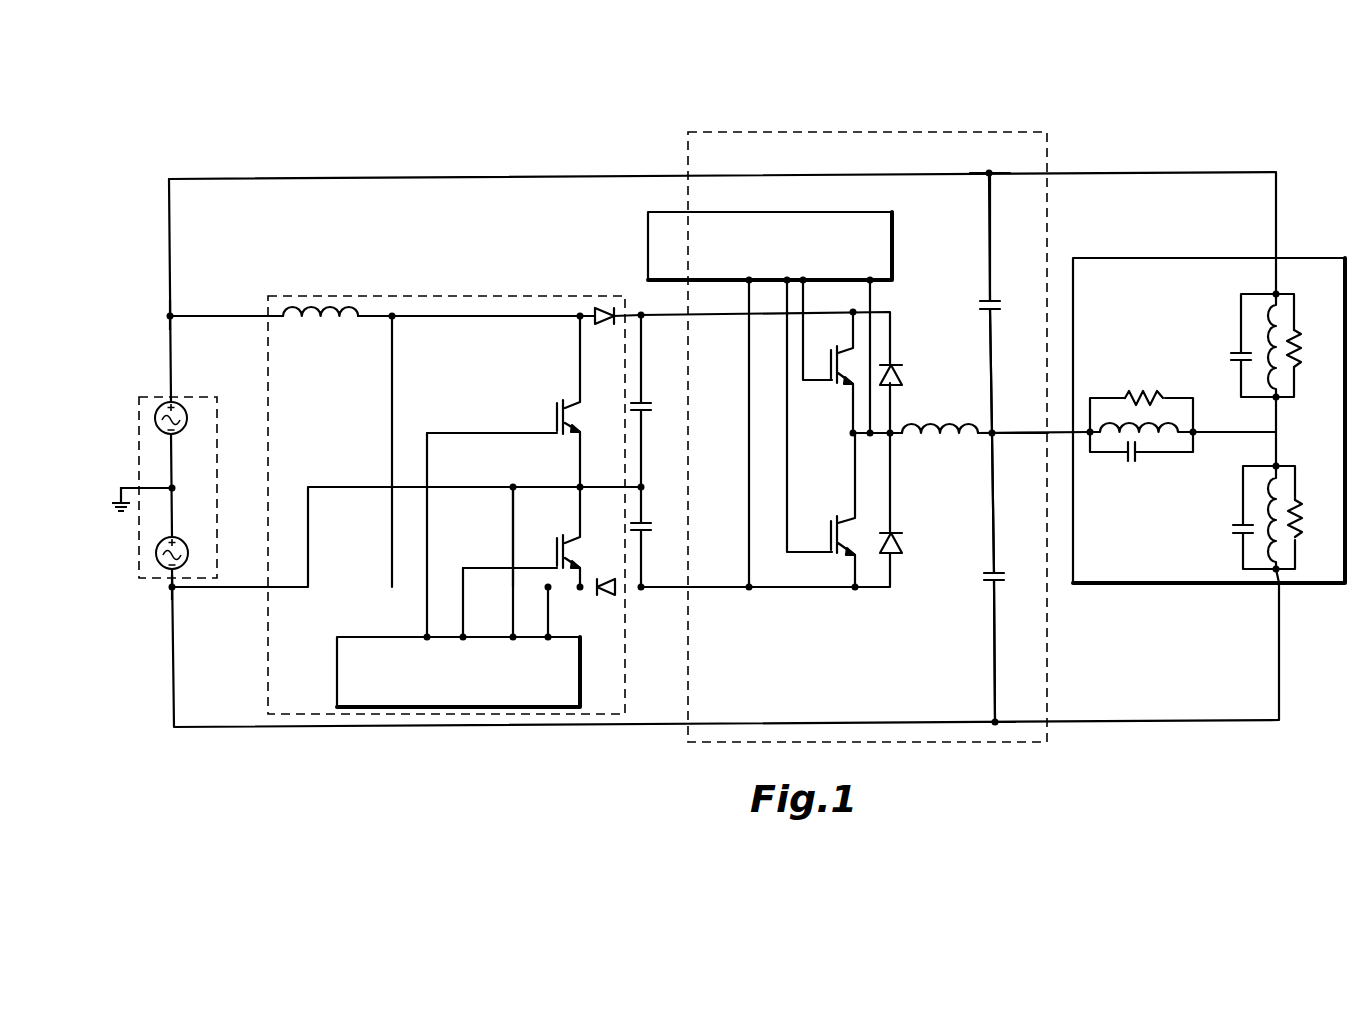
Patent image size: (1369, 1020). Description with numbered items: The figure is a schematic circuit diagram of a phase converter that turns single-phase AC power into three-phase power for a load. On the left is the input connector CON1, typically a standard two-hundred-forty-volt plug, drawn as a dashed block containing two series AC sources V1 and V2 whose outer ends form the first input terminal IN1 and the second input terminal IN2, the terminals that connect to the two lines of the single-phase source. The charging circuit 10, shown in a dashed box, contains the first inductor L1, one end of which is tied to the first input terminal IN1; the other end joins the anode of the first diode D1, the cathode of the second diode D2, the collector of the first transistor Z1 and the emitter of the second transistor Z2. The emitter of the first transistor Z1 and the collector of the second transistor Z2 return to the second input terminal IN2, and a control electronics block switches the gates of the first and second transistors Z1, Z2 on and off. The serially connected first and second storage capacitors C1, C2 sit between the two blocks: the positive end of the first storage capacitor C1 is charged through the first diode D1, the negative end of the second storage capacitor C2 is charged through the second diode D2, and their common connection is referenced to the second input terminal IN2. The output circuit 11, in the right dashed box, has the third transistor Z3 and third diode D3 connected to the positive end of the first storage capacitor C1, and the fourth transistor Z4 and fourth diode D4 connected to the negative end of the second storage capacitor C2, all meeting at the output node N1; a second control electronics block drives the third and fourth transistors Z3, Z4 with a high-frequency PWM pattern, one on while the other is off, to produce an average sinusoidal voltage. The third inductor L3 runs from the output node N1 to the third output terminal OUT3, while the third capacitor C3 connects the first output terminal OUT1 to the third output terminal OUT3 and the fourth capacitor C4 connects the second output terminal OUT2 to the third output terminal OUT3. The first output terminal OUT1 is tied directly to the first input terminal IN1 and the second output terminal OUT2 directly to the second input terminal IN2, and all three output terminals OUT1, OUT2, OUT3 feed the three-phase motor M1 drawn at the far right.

The charging circuit 10 is at (483, 295).
The output circuit 11 is at (711, 150).
The first inductor L1 is at (320, 327).
The first diode D1 is at (606, 333).
The second diode D2 is at (595, 603).
The first storage capacitor C1 is at (657, 401).
The second storage capacitor C2 is at (657, 537).
The first transistor Z1 is at (503, 401).
The second transistor Z2 is at (521, 537).
The third transistor Z3 is at (830, 372).
The fourth transistor Z4 is at (831, 510).
The third diode D3 is at (908, 377).
The fourth diode D4 is at (908, 546).
The third inductor L3 is at (940, 413).
The output node N1 is at (891, 448).
The third capacitor C3 is at (1007, 303).
The fourth capacitor C4 is at (974, 577).
The three phase motor M1 is at (1141, 444).
The AC voltage source V1 is at (182, 433).
The AC voltage source V2 is at (183, 539).
The input connector CON1 is at (139, 487).
The first input terminal IN1 is at (149, 346).
The second input terminal IN2 is at (147, 593).
The first output terminal OUT1 is at (982, 156).
The second output terminal OUT2 is at (965, 709).
The third output terminal OUT3 is at (1019, 448).